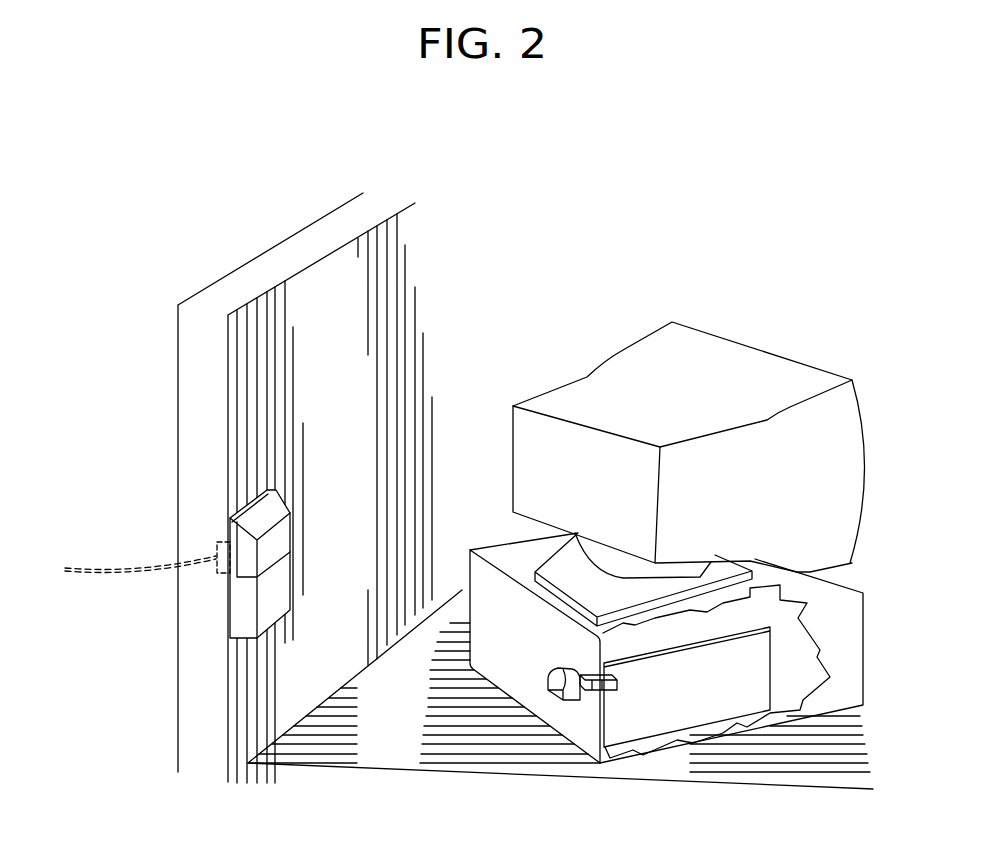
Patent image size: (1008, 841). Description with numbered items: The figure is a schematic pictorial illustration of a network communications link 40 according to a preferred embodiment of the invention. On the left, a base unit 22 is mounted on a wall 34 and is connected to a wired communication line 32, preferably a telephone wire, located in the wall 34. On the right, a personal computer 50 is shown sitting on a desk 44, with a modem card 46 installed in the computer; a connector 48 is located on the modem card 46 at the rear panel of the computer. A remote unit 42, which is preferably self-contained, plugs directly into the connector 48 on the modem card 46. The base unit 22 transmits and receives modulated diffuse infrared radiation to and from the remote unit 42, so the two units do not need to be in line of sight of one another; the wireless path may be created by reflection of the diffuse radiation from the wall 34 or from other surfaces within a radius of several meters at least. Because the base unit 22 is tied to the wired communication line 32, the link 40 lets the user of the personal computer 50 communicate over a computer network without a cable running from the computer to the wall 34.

The base unit 22 is at (275, 607).
The wired communication line 32 is at (222, 547).
The wall 34 is at (257, 320).
The network communications link 40 is at (535, 275).
The remote unit 42 is at (566, 670).
The desk 44 is at (498, 547).
The modem card 46 is at (755, 667).
The connector 48 is at (612, 690).
The personal computer 50 is at (732, 358).